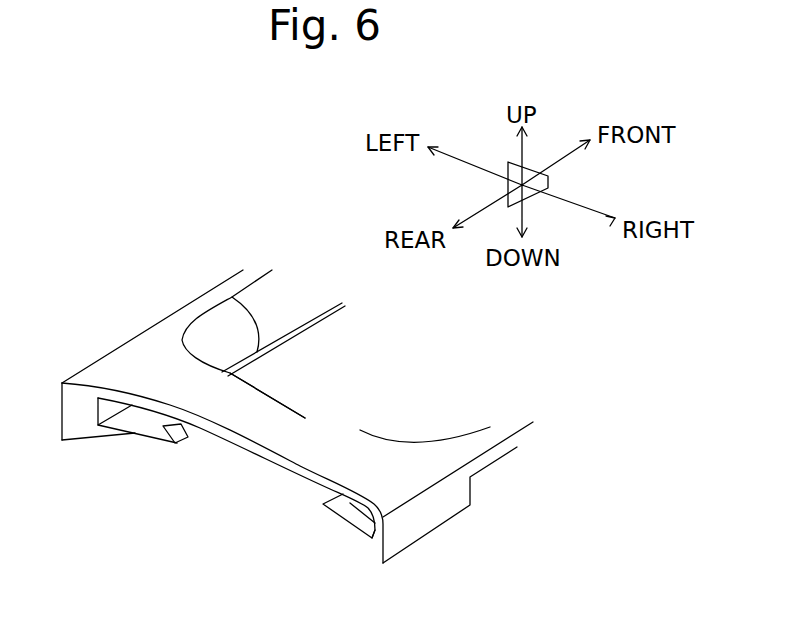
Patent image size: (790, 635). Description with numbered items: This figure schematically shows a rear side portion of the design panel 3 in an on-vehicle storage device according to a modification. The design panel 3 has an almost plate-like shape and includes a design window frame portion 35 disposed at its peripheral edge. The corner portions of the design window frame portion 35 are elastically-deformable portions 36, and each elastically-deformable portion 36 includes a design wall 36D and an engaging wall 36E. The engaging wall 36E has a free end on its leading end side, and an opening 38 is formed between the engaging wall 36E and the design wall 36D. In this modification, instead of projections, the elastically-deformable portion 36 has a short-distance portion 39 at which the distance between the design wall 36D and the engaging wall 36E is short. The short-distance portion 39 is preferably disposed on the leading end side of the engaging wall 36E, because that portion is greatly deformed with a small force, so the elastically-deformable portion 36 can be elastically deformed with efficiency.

The design panel 3 is at (208, 274).
The design window frame portion 35 is at (297, 424).
The elastically-deformable portion 36 is at (133, 356).
The design wall 36D is at (160, 378).
The engaging wall 36E is at (134, 435).
The opening 38 is at (187, 433).
The short-distance portion 39 is at (163, 430).